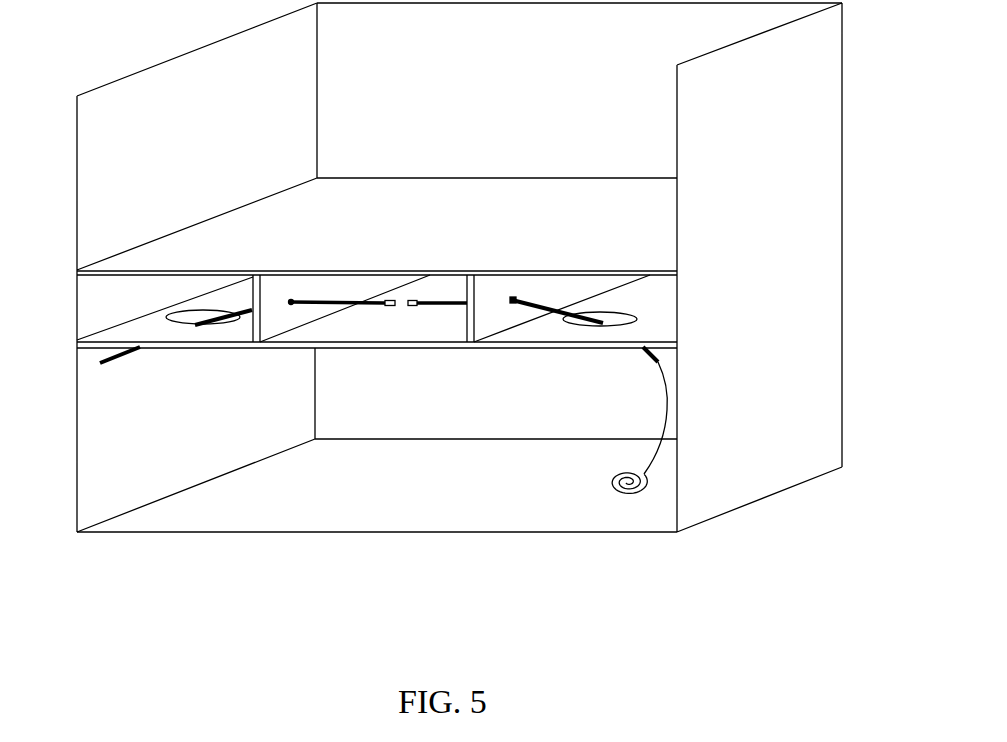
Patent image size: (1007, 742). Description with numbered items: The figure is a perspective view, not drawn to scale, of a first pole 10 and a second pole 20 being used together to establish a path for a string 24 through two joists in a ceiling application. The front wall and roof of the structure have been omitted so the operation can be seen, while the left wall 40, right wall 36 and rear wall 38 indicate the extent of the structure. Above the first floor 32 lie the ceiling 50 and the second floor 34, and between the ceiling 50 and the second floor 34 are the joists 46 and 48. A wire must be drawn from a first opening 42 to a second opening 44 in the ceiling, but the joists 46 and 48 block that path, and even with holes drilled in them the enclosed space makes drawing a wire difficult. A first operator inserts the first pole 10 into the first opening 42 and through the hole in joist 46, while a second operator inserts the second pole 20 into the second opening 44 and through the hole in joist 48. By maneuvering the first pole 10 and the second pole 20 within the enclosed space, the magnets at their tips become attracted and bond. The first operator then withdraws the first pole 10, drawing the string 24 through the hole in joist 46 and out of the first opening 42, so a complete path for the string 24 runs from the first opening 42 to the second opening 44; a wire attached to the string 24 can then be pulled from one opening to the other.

The first pole 10 is at (120, 363).
The second pole 20 is at (550, 298).
The string 24 is at (630, 494).
The first floor 32 is at (445, 499).
The second floor 34 is at (482, 229).
The right wall 36 is at (779, 228).
The rear wall 38 is at (507, 112).
The left wall 40 is at (200, 150).
The first opening 42 is at (184, 315).
The second opening 44 is at (625, 315).
The joist 46 is at (286, 328).
The joist 48 is at (502, 328).
The ceiling 50 is at (457, 349).